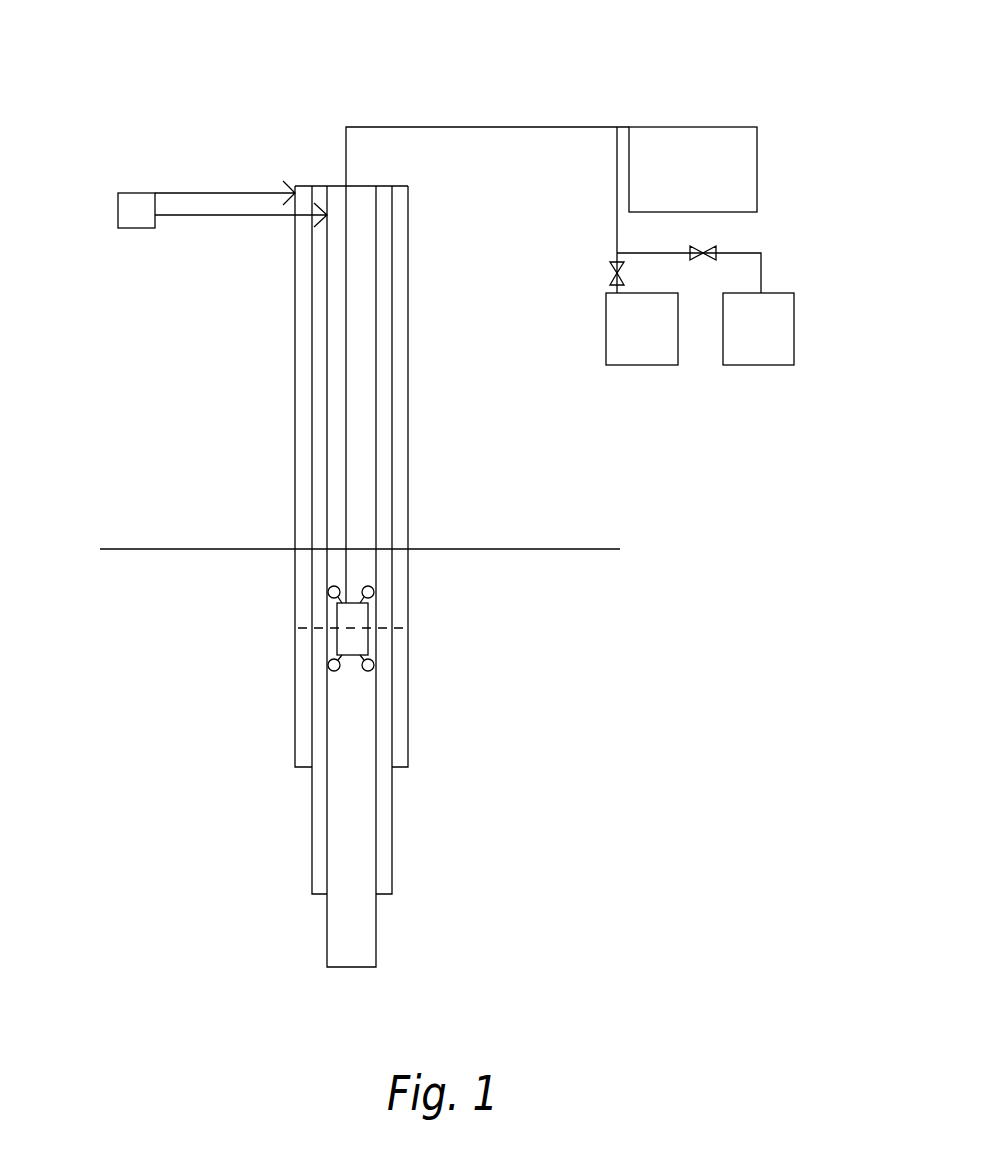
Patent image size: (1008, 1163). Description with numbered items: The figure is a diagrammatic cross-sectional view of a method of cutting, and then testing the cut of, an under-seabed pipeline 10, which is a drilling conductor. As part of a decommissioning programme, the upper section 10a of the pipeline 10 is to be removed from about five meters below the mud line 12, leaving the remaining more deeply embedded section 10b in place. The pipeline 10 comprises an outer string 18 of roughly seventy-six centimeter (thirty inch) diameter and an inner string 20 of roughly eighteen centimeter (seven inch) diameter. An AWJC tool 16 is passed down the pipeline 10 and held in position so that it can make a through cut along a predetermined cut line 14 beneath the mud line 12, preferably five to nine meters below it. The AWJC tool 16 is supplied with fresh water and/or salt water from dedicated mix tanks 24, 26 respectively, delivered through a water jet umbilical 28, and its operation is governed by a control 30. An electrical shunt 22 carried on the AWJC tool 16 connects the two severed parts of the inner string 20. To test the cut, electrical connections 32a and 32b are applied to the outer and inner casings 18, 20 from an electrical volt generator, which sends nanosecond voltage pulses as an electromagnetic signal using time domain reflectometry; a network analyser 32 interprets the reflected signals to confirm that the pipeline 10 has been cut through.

The pipeline 10 is at (440, 442).
The upper section 10a is at (295, 482).
The remaining more deeply embedded section 10b is at (393, 837).
The mud line 12 is at (602, 549).
The cut line 14 is at (426, 625).
The AWJC tool 16 is at (384, 651).
The outer string 18 is at (295, 760).
The inner string 20 is at (328, 930).
The electrical shunt 22 is at (326, 661).
The fresh water mix tank 24 is at (645, 347).
The salt water mix tank 26 is at (777, 345).
The water jet umbilical 28 is at (515, 128).
The control 30 is at (758, 165).
The network analyser 32 is at (133, 208).
The electrical connection 32a is at (238, 193).
The electrical connection 32b is at (262, 218).